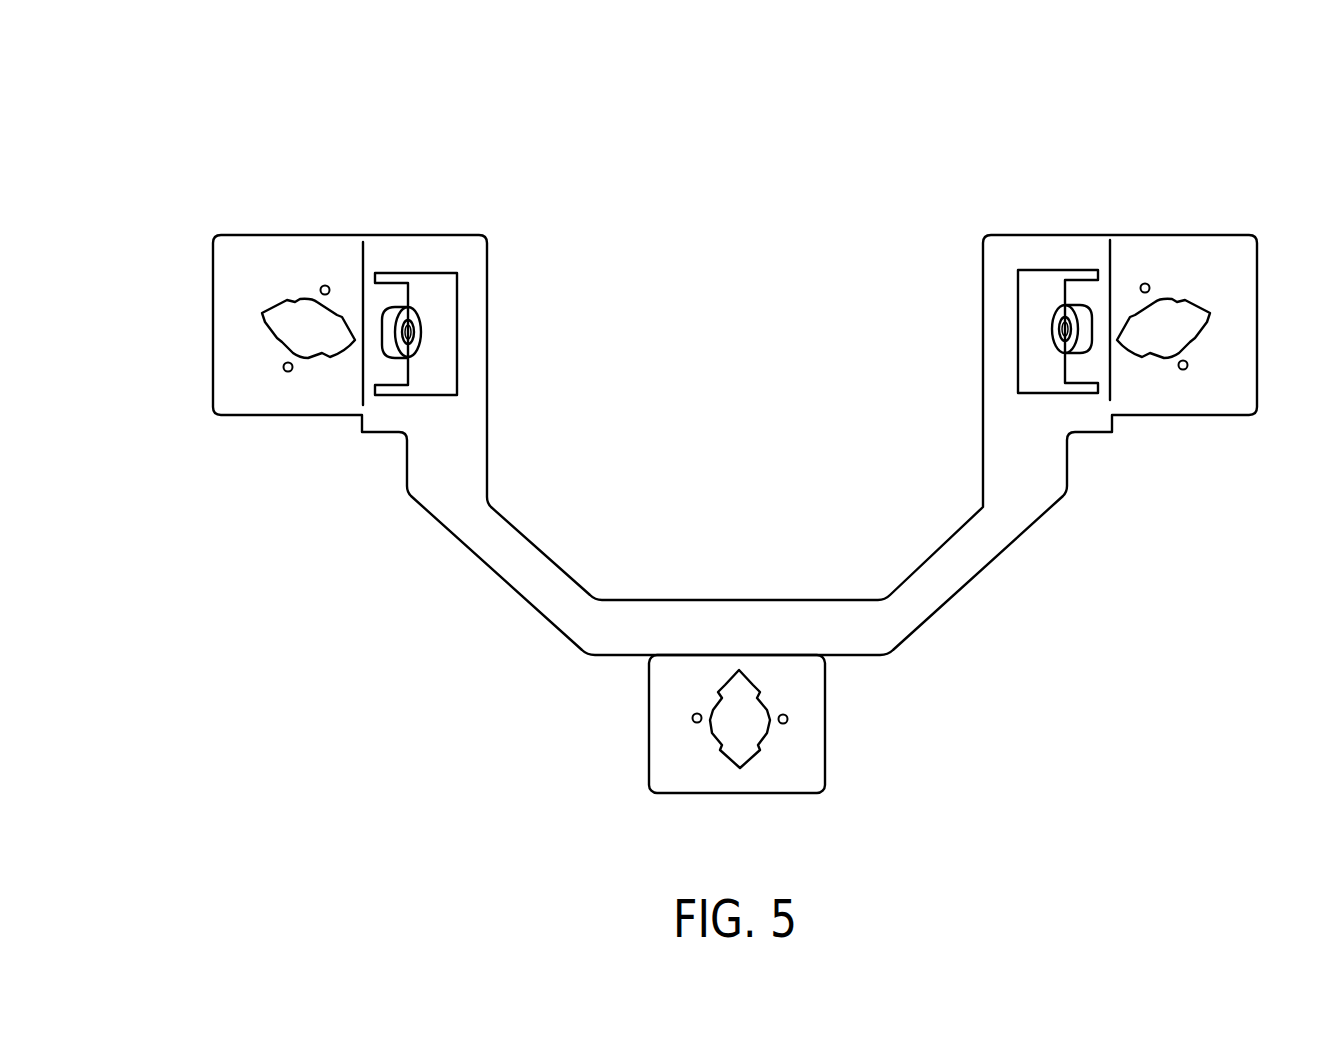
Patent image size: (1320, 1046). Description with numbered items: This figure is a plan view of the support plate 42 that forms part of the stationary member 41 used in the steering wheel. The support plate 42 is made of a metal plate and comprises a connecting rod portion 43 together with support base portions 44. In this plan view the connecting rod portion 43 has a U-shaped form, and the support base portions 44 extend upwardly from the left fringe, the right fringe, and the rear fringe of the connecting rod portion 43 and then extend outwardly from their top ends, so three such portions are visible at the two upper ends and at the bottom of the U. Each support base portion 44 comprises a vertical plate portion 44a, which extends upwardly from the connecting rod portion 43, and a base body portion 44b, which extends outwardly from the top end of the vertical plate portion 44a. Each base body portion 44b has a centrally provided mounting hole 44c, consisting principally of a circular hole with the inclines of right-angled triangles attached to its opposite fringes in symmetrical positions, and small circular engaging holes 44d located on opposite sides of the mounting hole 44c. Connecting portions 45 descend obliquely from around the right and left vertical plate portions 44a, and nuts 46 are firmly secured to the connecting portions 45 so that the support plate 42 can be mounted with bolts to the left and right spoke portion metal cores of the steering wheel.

The stationary member 41 is at (735, 355).
The support plate 42 is at (1038, 178).
The connecting rod portion 43 is at (945, 567).
The support base portion 44 is at (405, 160).
The vertical plate portion 44a is at (367, 258).
The base body portion 44b is at (330, 252).
The mounting hole 44c is at (297, 307).
The engaging hole 44d is at (322, 287).
The connecting portion 45 is at (392, 293).
The nut 46 is at (413, 312).